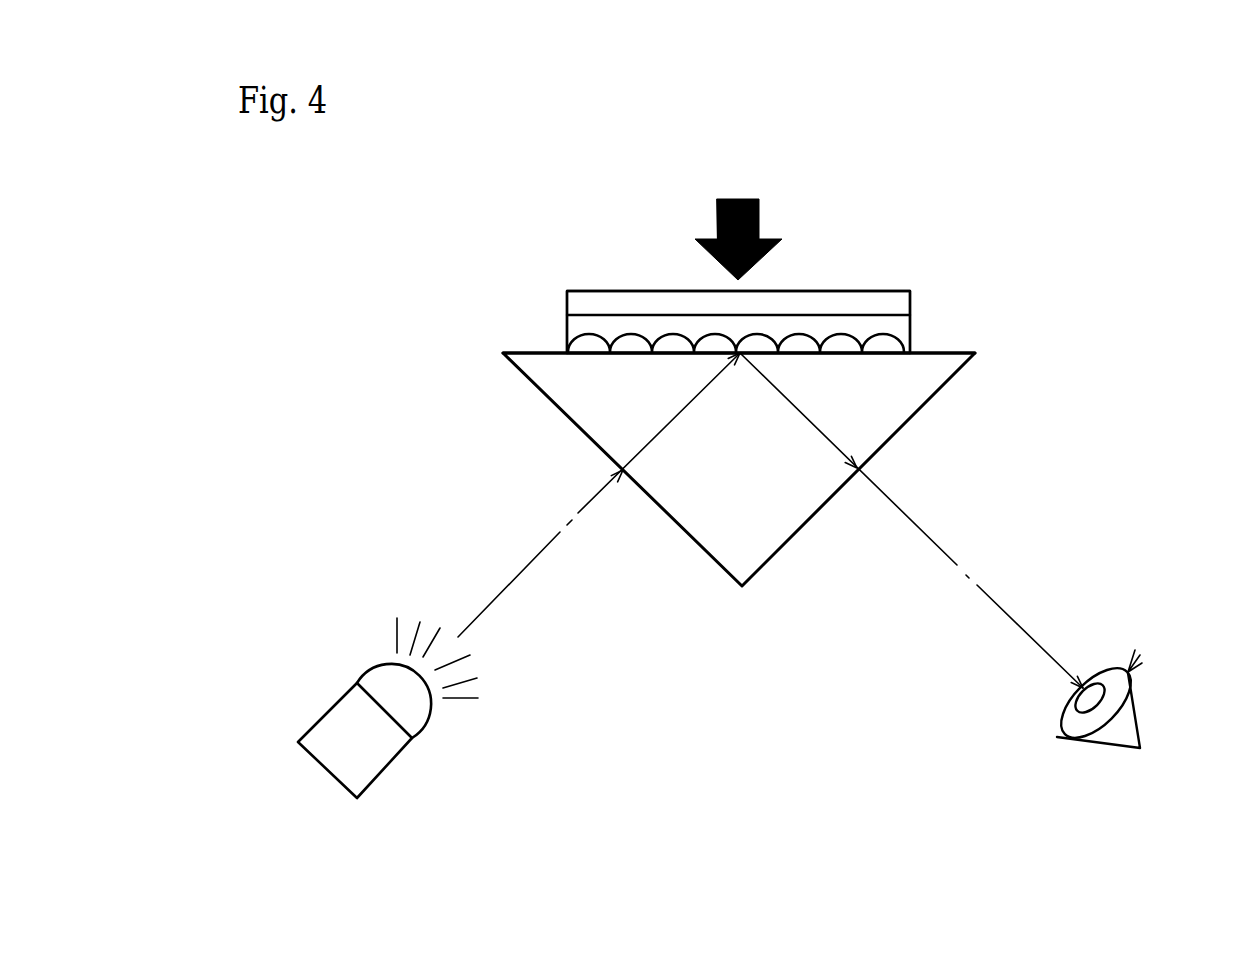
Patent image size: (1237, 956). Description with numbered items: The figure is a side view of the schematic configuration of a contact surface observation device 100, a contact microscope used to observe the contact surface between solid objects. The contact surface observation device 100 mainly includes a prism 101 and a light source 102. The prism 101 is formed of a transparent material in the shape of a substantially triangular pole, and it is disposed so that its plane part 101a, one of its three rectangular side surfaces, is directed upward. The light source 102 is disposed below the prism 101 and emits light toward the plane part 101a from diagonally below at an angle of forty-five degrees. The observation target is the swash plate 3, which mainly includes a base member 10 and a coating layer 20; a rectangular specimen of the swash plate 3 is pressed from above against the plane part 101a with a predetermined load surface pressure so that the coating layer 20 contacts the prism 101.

The contact surface observation device 100 is at (676, 423).
The swash plate 3 is at (915, 318).
The base member 10 is at (567, 303).
The coating layer 20 is at (567, 332).
The prism 101 is at (750, 590).
The plane part 101a is at (943, 352).
The light source 102 is at (325, 707).